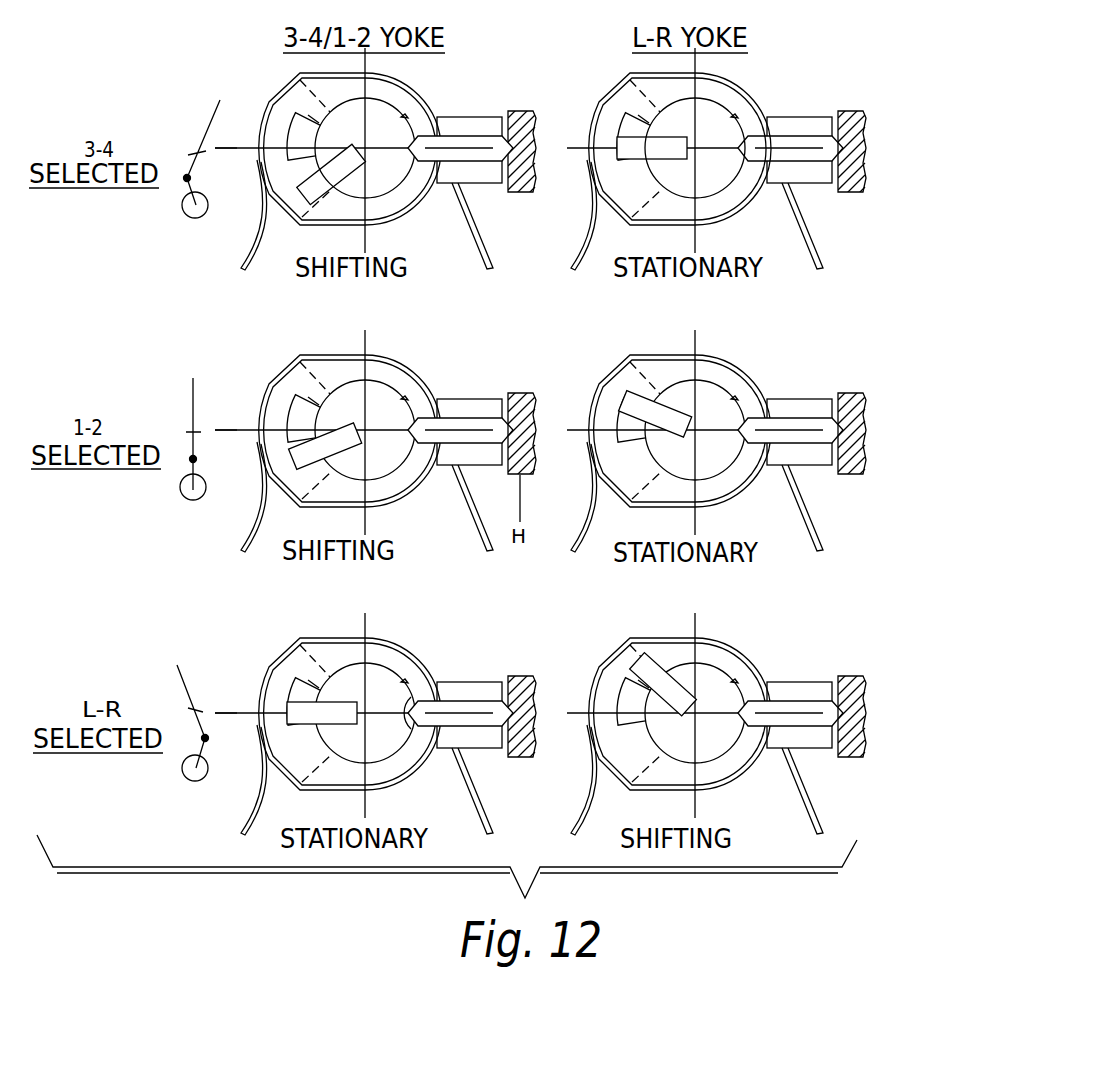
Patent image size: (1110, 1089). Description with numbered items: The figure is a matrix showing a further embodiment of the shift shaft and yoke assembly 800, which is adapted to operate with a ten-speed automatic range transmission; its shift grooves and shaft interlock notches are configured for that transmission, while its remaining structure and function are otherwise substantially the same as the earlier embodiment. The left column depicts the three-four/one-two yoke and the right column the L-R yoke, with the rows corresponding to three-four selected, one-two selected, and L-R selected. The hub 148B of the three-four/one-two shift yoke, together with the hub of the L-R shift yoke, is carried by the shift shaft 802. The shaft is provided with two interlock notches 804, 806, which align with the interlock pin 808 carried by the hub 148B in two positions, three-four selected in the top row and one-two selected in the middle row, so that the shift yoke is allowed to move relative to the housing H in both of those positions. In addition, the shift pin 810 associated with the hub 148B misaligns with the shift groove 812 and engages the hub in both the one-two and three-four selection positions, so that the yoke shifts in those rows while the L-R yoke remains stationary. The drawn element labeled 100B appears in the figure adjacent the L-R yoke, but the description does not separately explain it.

The shift shaft and yoke assembly 800 is at (862, 60).
The shift shaft 802 is at (380, 128).
The interlock notch 804 is at (413, 690).
The interlock notch 806 is at (408, 708).
The interlock pin 808 is at (480, 157).
The shift pin 810 is at (314, 207).
The shift groove 812 is at (302, 125).
The hub 148B is at (250, 250).
The shift rail link 100B is at (778, 234).